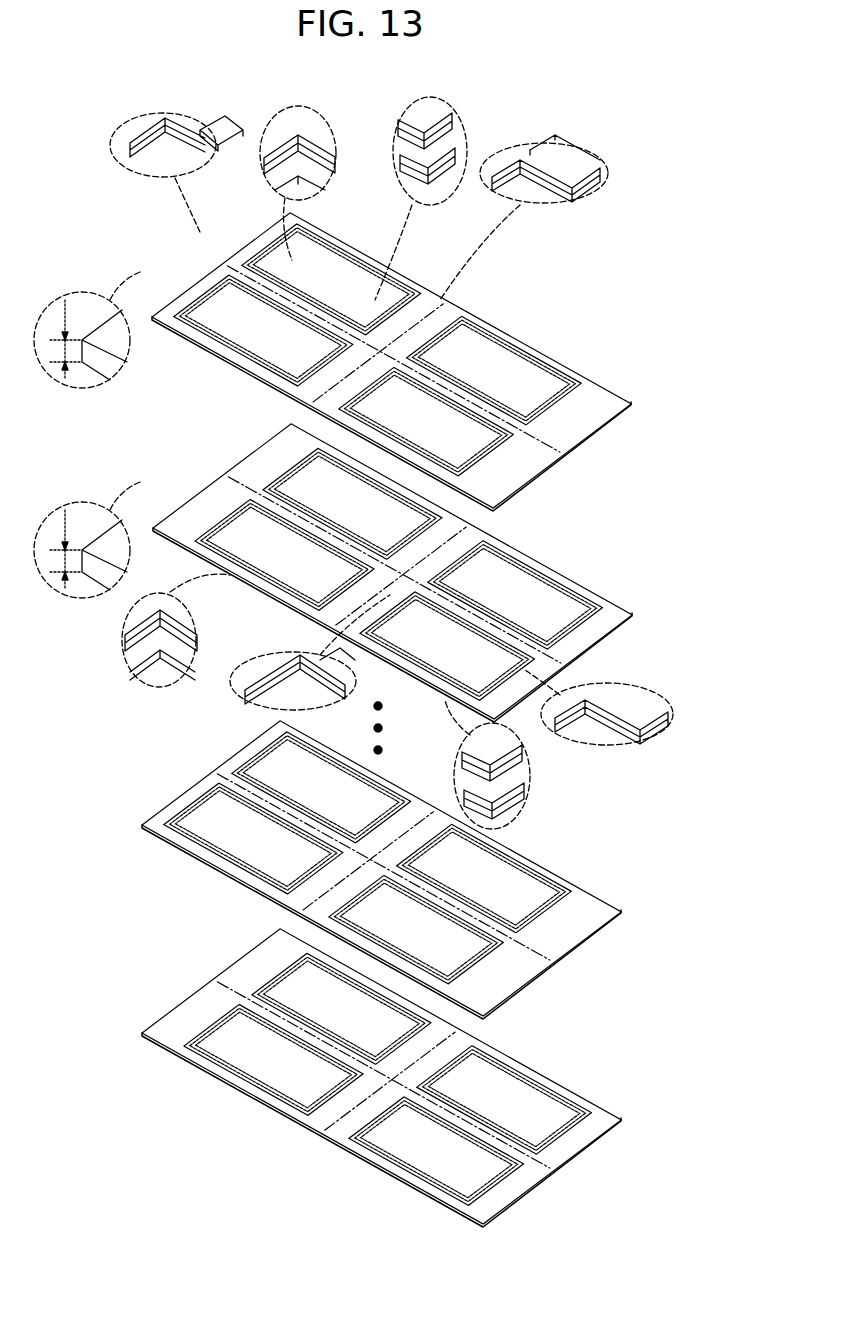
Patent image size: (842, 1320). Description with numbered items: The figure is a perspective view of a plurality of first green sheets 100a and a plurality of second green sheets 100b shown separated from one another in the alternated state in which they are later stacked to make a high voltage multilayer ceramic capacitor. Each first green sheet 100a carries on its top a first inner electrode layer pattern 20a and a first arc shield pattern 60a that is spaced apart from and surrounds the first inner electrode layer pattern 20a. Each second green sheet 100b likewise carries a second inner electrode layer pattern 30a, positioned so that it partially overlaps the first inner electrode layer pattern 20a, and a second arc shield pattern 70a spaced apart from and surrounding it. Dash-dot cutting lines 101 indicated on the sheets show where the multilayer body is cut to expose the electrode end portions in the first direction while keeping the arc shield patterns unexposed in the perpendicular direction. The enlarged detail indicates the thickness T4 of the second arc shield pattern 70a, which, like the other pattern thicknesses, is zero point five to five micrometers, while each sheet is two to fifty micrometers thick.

The first green sheet 100a is at (128, 128).
The second green sheet 100b is at (175, 520).
The first inner electrode layer pattern 20a is at (270, 136).
The second inner electrode layer pattern 30a is at (255, 530).
The first arc shield pattern 60a is at (135, 170).
The second arc shield pattern 70a is at (238, 483).
The cutting line 101 is at (205, 258).
The thickness of the second arc shield pattern T4 is at (87, 435).